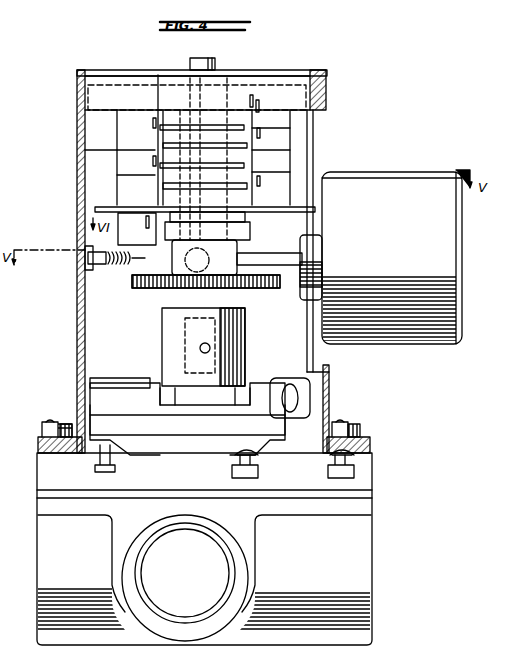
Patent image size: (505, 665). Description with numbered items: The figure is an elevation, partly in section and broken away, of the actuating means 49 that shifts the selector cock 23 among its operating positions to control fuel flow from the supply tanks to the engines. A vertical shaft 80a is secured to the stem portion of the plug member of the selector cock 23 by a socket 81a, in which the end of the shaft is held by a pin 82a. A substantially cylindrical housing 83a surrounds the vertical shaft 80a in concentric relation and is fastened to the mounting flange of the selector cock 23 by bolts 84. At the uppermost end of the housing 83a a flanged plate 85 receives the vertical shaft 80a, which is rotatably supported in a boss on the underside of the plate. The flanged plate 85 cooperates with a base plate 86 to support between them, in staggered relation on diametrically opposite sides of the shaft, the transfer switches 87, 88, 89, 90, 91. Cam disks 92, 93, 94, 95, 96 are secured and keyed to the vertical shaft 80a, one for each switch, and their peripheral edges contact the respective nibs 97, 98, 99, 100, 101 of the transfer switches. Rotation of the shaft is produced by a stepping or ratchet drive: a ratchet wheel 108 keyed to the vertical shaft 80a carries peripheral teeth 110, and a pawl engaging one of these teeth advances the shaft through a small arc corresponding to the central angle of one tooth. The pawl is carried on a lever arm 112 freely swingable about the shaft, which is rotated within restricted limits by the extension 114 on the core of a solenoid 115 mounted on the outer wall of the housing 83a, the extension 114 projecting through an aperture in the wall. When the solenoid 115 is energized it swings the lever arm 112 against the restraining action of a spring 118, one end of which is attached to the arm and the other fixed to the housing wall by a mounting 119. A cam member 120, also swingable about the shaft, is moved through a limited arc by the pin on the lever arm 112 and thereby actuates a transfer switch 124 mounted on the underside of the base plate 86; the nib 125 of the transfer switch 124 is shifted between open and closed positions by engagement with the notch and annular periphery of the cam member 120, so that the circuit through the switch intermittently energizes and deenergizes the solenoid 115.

The selector cock 23 is at (355, 518).
The actuating means 49 is at (340, 98).
The vertical shaft 80a is at (215, 58).
The socket 81a is at (243, 355).
The pin 82a is at (200, 348).
The housing 83a is at (78, 153).
The bolts 84 is at (50, 422).
The flanged plate 85 is at (312, 86).
The base plate 86 is at (316, 210).
The transfer switch 87 is at (290, 120).
The transfer switch 88 is at (118, 125).
The transfer switch 89 is at (288, 148).
The transfer switch 90 is at (120, 176).
The transfer switch 91 is at (288, 183).
The cam disk 92 is at (230, 110).
The cam disk 93 is at (165, 128).
The cam disk 94 is at (240, 145).
The cam disk 95 is at (165, 166).
The cam disk 96 is at (243, 186).
The nib 97 is at (255, 105).
The nib 98 is at (159, 125).
The nib 99 is at (256, 148).
The nib 100 is at (130, 165).
The nib 101 is at (258, 194).
The ratchet wheel 108 is at (150, 289).
The teeth 110 is at (232, 280).
The lever arm 112 is at (190, 262).
The extension 114 is at (280, 258).
The solenoid 115 is at (408, 186).
The spring 118 is at (110, 252).
The mounting 119 is at (86, 266).
The cam member 120 is at (242, 235).
The transfer switch 124 is at (95, 210).
The nib 125 is at (157, 236).